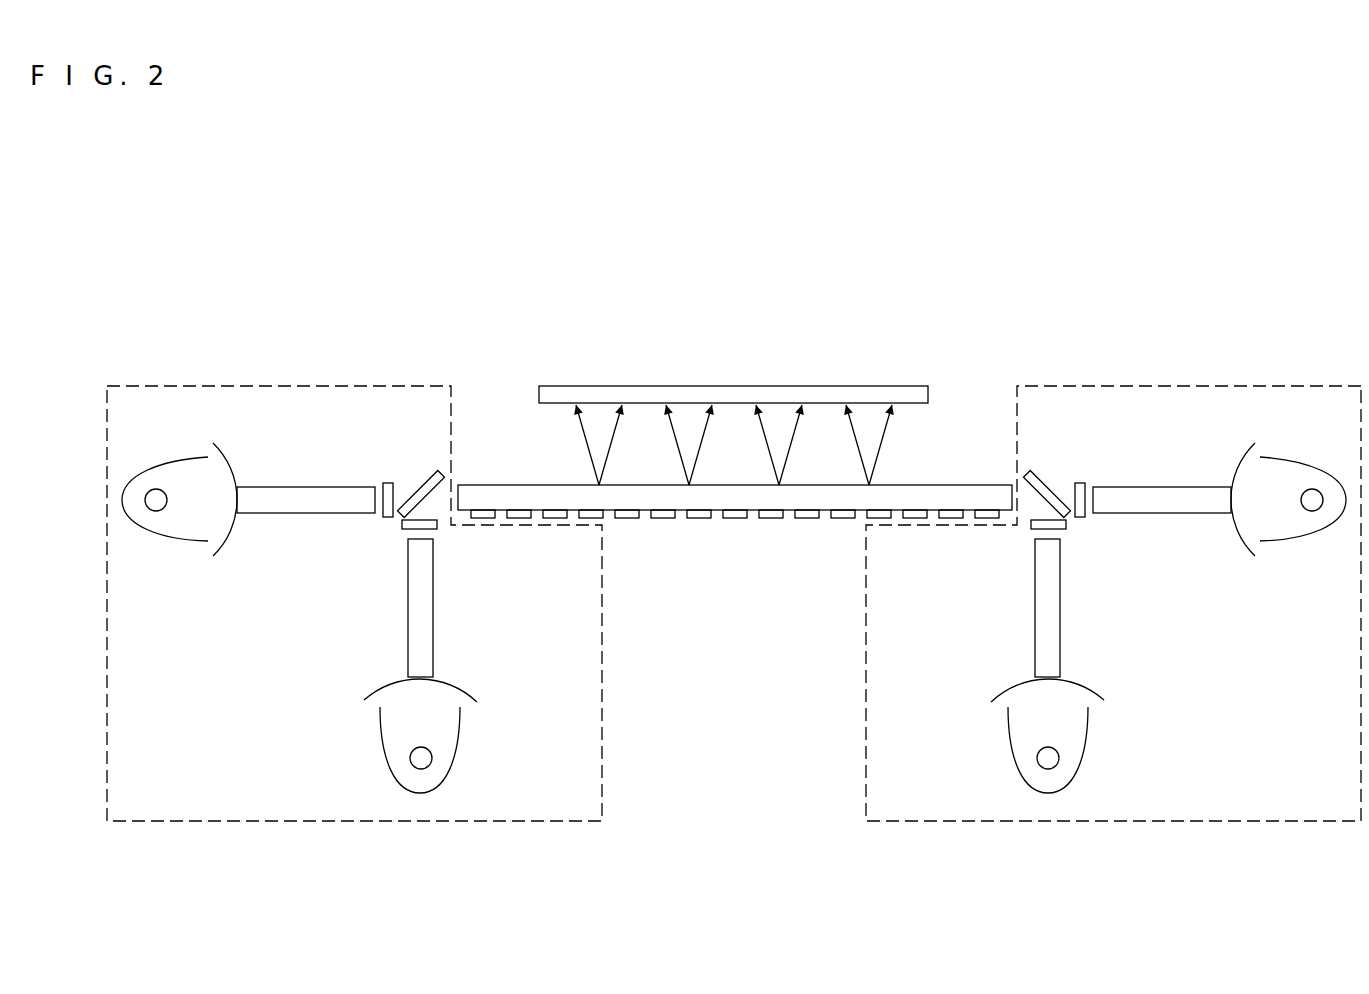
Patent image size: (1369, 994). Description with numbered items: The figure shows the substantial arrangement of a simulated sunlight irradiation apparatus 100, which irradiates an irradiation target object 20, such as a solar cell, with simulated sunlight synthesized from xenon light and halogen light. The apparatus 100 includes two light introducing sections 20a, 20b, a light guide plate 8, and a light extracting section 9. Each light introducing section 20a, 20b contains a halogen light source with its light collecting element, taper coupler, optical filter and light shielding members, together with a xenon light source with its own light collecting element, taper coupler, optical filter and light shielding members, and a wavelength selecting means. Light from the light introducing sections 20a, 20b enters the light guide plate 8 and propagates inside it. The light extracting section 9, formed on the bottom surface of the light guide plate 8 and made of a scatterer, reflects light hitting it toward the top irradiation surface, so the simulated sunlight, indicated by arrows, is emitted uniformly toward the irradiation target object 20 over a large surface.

The light guide plate 8 is at (507, 492).
The light extracting section 9 is at (772, 520).
The irradiation target object 20 is at (928, 394).
The light introducing section 20a is at (355, 822).
The light introducing section 20b is at (1113, 822).
The simulated sunlight irradiation apparatus 100 is at (1230, 225).